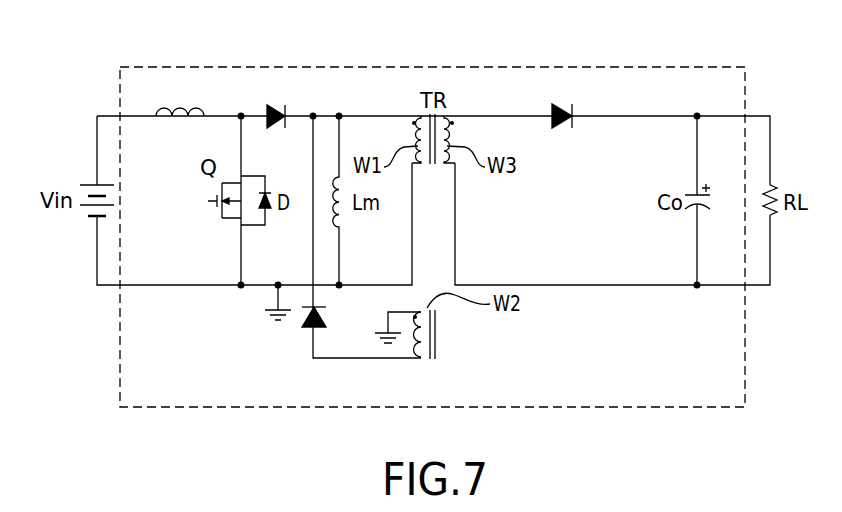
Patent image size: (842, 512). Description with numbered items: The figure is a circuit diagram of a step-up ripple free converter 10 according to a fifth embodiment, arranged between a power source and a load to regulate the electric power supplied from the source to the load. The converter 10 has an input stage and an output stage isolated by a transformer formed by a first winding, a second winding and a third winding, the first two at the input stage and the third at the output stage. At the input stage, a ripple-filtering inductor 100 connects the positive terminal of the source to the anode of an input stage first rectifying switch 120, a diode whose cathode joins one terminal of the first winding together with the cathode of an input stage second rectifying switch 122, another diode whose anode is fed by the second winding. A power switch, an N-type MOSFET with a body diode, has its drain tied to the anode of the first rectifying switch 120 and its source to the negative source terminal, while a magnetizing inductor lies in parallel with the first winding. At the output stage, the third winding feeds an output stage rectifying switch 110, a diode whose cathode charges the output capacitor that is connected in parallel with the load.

The step-up ripple free converter 10 is at (433, 67).
The ripple-filtering inductor 100 is at (180, 109).
The output stage rectifying switch 110 is at (567, 103).
The input stage first rectifying switch 120 is at (285, 103).
The input stage second rectifying switch 122 is at (302, 321).